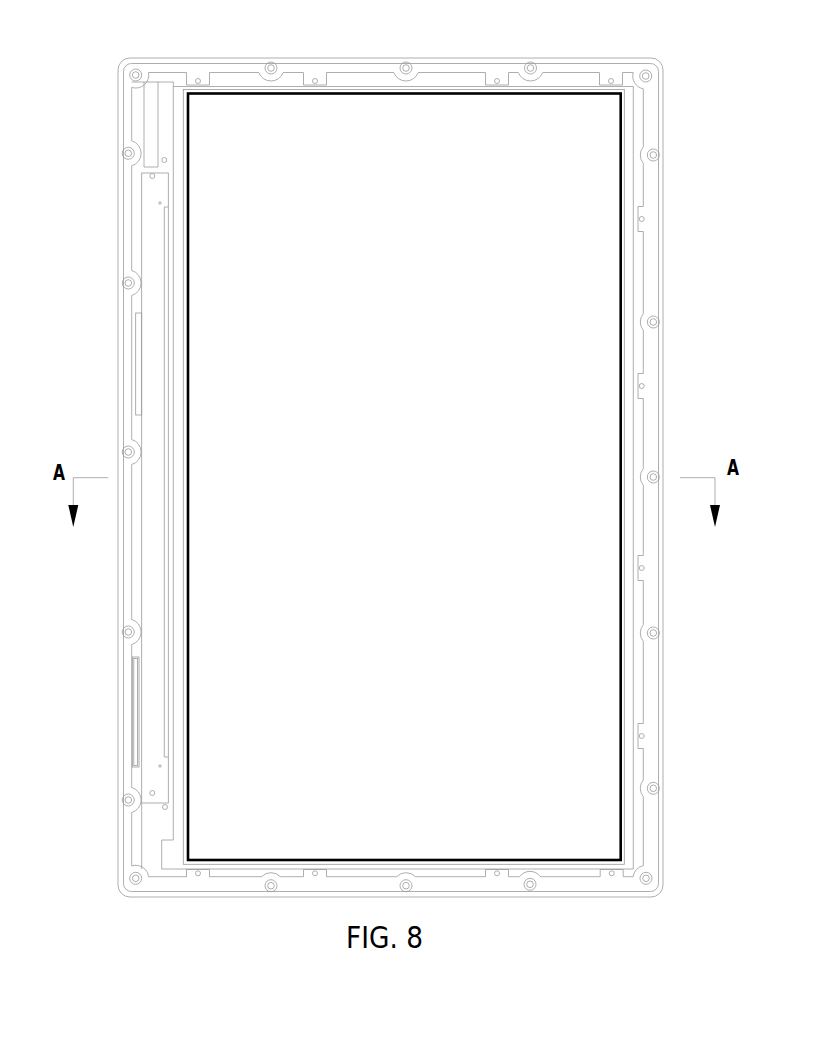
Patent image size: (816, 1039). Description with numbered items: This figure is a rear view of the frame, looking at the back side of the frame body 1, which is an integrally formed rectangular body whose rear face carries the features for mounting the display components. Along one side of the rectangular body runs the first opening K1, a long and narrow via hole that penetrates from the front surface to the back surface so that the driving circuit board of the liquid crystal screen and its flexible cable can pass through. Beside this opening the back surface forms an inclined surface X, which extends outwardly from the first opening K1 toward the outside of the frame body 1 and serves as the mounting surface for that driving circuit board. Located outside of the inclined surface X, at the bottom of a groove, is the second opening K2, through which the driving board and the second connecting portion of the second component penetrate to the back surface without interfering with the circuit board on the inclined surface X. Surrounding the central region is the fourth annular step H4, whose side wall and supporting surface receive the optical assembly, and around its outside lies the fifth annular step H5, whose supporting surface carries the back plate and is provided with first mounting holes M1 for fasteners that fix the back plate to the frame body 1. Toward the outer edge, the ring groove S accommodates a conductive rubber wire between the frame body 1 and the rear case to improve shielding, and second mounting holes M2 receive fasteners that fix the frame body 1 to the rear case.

The frame body 1 is at (647, 122).
The ring groove S is at (128, 827).
The fourth annular step H4 is at (632, 139).
The fifth annular step H5 is at (638, 203).
The first mounting hole M1 is at (645, 382).
The second mounting hole M2 is at (123, 282).
The inclined surface X is at (157, 378).
The first opening K1 is at (160, 583).
The second opening K2 is at (135, 718).